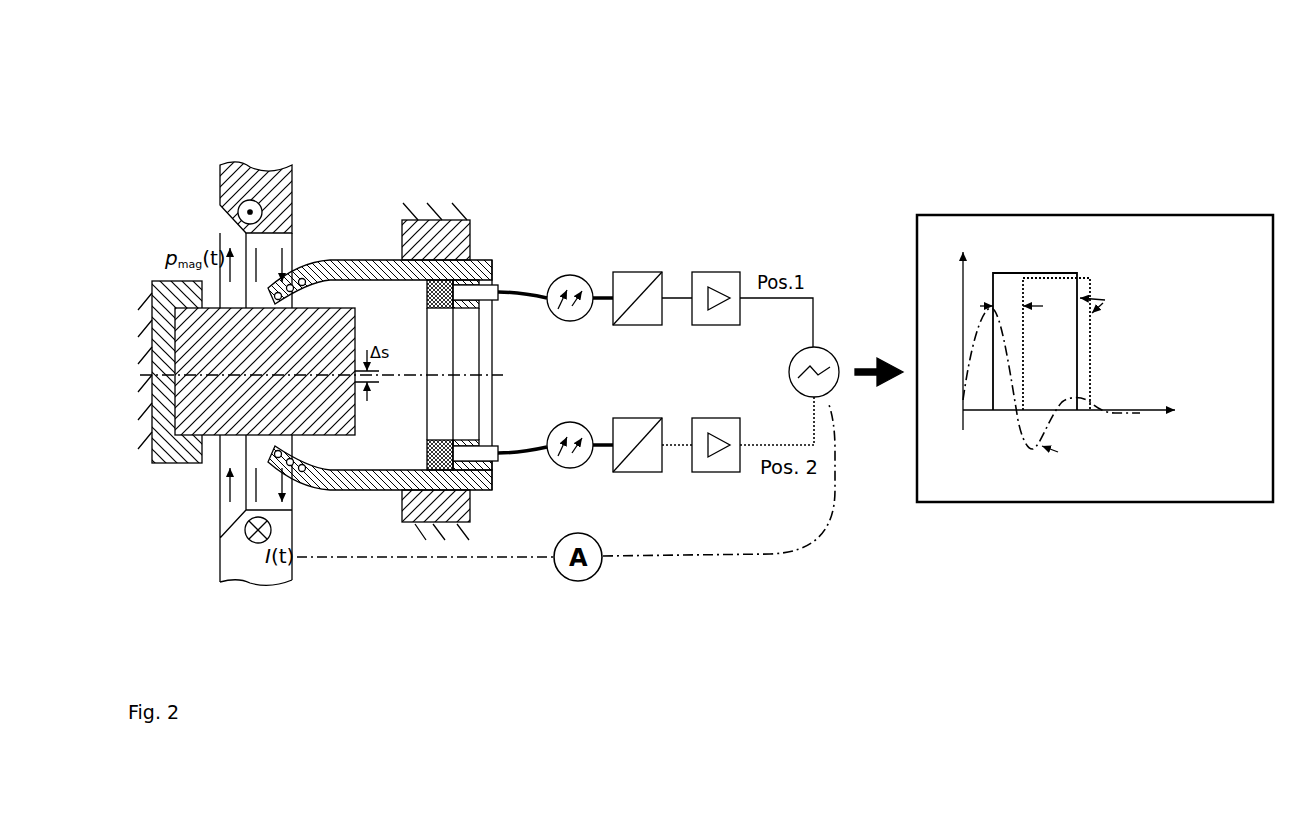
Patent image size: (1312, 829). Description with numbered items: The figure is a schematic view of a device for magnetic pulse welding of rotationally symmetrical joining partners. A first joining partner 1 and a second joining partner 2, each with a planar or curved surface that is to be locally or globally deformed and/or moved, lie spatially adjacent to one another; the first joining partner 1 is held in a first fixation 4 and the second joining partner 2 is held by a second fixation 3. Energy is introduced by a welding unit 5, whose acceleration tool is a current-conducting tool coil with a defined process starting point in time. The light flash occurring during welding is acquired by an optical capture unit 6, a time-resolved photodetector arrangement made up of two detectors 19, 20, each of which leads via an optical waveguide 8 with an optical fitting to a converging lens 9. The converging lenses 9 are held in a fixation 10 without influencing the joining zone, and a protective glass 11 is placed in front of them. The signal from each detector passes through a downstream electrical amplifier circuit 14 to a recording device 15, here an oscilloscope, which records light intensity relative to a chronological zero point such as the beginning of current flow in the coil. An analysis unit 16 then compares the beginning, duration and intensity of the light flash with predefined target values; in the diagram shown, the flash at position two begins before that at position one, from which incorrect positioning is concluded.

The first joining partner 1 is at (333, 260).
The second joining partner 2 is at (305, 328).
The second fixation 3 is at (157, 293).
The first fixation 4 is at (437, 238).
The welding unit 5 is at (239, 177).
The optical capture unit 6 is at (616, 323).
The optical waveguide 8 is at (570, 275).
The converging lens 9 is at (491, 282).
The fixation 10 is at (470, 471).
The protective glass 11 is at (422, 492).
The electrical amplifier circuit 14 is at (715, 272).
The recording device 15 is at (823, 345).
The analysis unit 16 is at (947, 215).
The detector 19 is at (627, 272).
The detector 20 is at (632, 473).